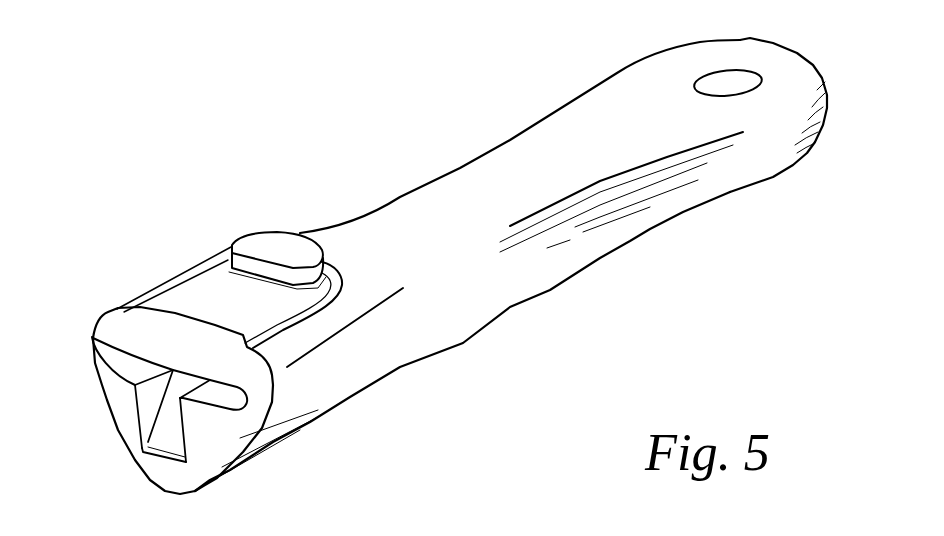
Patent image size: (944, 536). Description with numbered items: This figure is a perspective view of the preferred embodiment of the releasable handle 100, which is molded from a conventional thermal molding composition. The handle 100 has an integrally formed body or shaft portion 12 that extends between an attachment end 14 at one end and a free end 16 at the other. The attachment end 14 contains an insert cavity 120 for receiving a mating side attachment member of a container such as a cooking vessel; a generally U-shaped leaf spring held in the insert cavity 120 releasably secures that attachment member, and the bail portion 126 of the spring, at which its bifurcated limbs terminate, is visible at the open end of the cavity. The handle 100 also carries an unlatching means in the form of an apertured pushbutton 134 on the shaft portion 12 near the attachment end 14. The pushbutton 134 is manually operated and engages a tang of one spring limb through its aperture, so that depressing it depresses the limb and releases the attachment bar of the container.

The releasable handle 100 is at (424, 138).
The body or shaft portion 12 is at (510, 139).
The attachment end 14 is at (123, 330).
The free end 16 is at (798, 88).
The insert cavity 120 is at (135, 369).
The intermediate bail portion 126 is at (167, 427).
The apertured pushbutton 134 is at (263, 245).